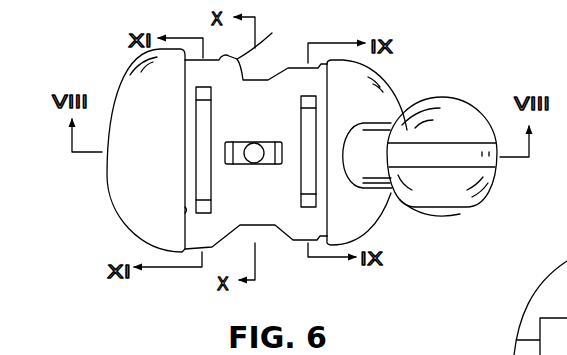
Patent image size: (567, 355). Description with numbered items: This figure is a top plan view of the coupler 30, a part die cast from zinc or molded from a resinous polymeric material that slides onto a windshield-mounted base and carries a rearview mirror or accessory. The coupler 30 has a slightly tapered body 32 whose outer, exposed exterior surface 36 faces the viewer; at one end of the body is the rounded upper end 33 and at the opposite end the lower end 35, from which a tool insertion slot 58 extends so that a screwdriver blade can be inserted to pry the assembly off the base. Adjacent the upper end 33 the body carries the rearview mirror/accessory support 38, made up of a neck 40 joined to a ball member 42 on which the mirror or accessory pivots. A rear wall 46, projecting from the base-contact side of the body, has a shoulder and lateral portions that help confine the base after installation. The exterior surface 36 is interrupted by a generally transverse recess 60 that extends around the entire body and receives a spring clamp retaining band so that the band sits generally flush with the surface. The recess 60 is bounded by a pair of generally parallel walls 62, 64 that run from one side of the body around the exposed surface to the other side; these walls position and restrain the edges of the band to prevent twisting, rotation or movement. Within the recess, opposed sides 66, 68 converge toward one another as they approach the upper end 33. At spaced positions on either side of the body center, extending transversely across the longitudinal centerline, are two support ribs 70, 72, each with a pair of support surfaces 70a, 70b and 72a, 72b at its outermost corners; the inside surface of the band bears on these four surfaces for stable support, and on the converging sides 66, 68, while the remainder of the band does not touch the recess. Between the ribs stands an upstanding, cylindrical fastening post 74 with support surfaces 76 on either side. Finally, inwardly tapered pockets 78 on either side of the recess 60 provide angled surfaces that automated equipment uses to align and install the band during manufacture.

The coupler 30 is at (447, 150).
The coupler body 32 is at (405, 92).
The upper end 33 is at (443, 216).
The lower end 35 is at (110, 198).
The exterior surface 36 is at (238, 150).
The rearview mirror/accessory support 38 is at (455, 106).
The neck 40 is at (380, 186).
The ball member 42 is at (478, 125).
The rear wall 46 is at (532, 308).
The tool insertion slot 58 is at (518, 337).
The transverse recess 60 is at (298, 251).
The wall 62 is at (328, 210).
The wall 64 is at (183, 207).
The side 66 is at (294, 66).
The side 68 is at (178, 250).
The support rib 70 is at (295, 154).
The support surface 70a is at (302, 104).
The support surface 70b is at (302, 204).
The support rib 72 is at (230, 155).
The support surface 72a is at (212, 100).
The support surface 72b is at (211, 207).
The fastening post 74 is at (253, 157).
The support surface 76 is at (248, 152).
The tapered pocket 78 is at (253, 66).